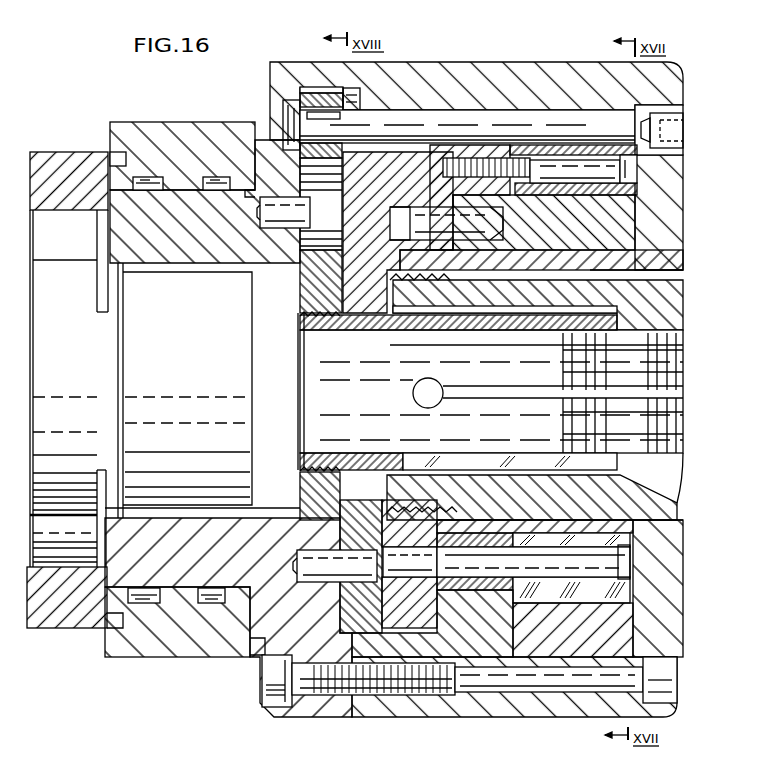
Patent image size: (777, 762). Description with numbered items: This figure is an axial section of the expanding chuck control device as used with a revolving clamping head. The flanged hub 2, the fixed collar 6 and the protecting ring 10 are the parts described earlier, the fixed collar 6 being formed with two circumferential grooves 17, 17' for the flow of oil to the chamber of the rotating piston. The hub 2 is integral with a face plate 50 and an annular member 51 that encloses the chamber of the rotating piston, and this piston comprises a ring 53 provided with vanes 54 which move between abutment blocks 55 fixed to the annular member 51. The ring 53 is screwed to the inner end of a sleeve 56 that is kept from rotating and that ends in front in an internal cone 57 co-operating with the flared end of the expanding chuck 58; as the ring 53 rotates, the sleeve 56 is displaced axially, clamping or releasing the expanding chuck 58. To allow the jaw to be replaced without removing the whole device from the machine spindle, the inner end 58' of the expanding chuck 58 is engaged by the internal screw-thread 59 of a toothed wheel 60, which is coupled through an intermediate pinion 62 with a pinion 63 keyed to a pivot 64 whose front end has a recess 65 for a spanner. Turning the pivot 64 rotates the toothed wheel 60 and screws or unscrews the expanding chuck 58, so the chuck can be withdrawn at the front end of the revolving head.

The flanged hub 2 is at (175, 530).
The fixed collar 6 is at (178, 137).
The protecting ring 10 is at (60, 610).
The circumferential groove 17 is at (210, 640).
The circumferential groove 17' is at (139, 640).
The face plate 50 is at (667, 80).
The annular member 51 is at (490, 84).
The ring 53 is at (407, 170).
The vanes 54 is at (562, 583).
The abutment blocks 55 is at (557, 150).
The sleeve 56 is at (493, 294).
The internal cone 57 is at (647, 492).
The expanding chuck 58 is at (623, 393).
The inner end of the expanding chuck 58' is at (458, 445).
The internal screw-thread 59 is at (315, 332).
The toothed wheel 60 is at (322, 500).
The intermediate pinion 62 is at (317, 240).
The pinion 63 is at (321, 96).
The pivot 64 is at (441, 128).
The recess 65 is at (680, 143).